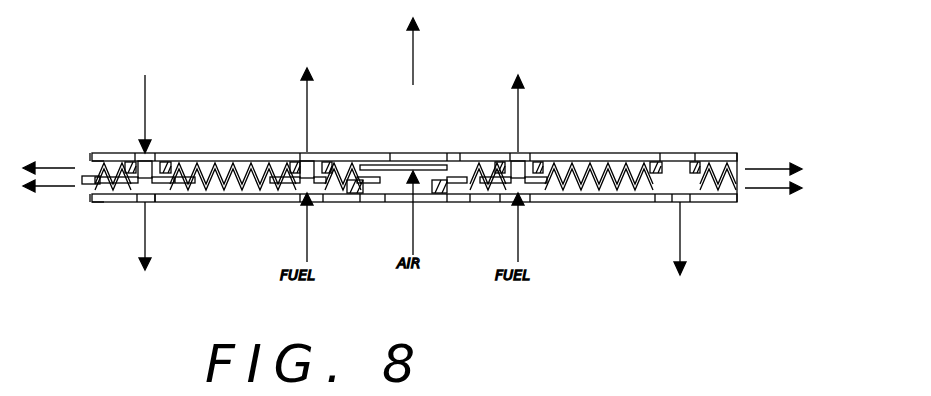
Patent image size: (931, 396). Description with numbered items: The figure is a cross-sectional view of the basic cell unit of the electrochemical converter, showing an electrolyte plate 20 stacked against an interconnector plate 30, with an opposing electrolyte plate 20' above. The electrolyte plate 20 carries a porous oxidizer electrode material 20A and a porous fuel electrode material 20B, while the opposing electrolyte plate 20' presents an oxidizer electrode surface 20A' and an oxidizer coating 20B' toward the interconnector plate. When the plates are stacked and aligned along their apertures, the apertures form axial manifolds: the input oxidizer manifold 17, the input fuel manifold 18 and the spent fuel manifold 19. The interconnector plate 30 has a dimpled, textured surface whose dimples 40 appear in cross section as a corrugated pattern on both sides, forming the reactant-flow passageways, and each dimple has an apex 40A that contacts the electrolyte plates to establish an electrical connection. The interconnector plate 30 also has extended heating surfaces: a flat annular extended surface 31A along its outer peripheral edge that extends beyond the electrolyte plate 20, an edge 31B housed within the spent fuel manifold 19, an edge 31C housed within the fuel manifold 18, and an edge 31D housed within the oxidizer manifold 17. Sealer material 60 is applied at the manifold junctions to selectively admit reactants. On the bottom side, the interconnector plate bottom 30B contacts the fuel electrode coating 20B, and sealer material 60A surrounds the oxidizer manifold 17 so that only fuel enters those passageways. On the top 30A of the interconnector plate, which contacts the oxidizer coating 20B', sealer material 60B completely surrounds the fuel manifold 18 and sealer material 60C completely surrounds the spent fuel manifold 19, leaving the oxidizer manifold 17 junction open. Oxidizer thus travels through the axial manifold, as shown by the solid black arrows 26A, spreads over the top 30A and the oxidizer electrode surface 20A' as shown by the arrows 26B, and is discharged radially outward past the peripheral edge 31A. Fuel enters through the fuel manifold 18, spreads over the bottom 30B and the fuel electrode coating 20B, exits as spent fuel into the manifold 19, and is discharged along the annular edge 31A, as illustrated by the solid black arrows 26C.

The input oxidizer manifold 17 is at (440, 152).
The input fuel manifold 18 is at (308, 152).
The spent fuel manifold 19 is at (155, 202).
The electrolyte plate 20 is at (56, 217).
The opposing electrolyte plate 20' is at (61, 142).
The oxidizer electrode material 20A is at (404, 230).
The oxidizer electrode surface 20A' is at (414, 133).
The fuel electrode material 20B is at (75, 228).
The oxidizer coating of opposing electrolyte plate 20B' is at (82, 133).
The oxidizer flow arrows through axial manifolds 26A is at (413, 43).
The oxidizer flow arrows through cell unit 26B is at (54, 168).
The fuel flow arrows 26C is at (307, 90).
The interconnector plate 30 is at (742, 153).
The top of interconnector plate 30A is at (202, 161).
The interconnector plate bottom 30B is at (200, 203).
The flat annular extended surface 31A is at (82, 180).
The extended heating surface edge 31B is at (128, 202).
The extended heating surface edge 31C is at (287, 203).
The extended heating surface edge 31D is at (373, 202).
The dimples 40 is at (177, 164).
The apex of dimple 40A is at (226, 163).
The sealer material 60 is at (350, 203).
The sealer material about oxidizer manifold 60A is at (449, 203).
The sealer material about fuel manifolds 60B is at (325, 162).
The sealer material about spent fuel manifold 60C is at (656, 162).